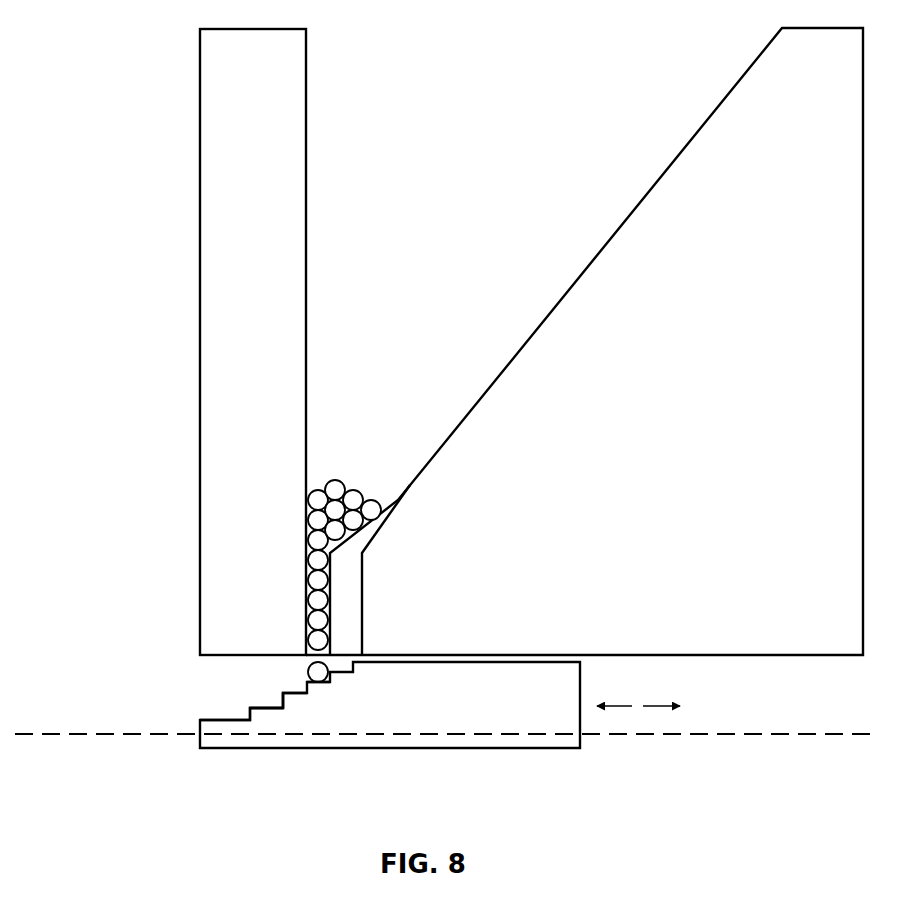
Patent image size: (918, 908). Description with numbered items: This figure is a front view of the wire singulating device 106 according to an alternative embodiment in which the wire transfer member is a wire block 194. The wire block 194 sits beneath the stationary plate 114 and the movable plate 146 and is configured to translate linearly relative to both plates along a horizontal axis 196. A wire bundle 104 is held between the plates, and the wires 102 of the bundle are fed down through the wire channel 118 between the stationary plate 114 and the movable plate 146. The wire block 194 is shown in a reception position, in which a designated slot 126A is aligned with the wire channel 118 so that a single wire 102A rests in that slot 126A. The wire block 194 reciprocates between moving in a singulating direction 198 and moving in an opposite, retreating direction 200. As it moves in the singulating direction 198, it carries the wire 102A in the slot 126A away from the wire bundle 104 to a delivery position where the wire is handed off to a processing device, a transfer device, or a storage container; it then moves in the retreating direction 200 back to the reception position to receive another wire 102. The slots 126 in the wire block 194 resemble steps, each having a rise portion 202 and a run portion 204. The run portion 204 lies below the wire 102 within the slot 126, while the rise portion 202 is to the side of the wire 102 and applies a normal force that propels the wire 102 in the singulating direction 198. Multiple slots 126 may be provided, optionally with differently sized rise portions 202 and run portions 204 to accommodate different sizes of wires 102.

The wire singulating device 106 is at (117, 100).
The stationary plate 114 is at (243, 467).
The wire bundle 104 is at (333, 482).
The movable plate 146 is at (350, 585).
The wire 102 is at (316, 636).
The wire channel 118 is at (311, 592).
The wire 102A is at (304, 676).
The slot 126A is at (310, 668).
The slots 126 is at (268, 702).
The wire block 194 is at (462, 700).
The run portion 204 is at (260, 712).
The rise portion 202 is at (288, 700).
The horizontal axis 196 is at (767, 733).
The singulating direction 198 is at (613, 707).
The retreating direction 200 is at (662, 707).